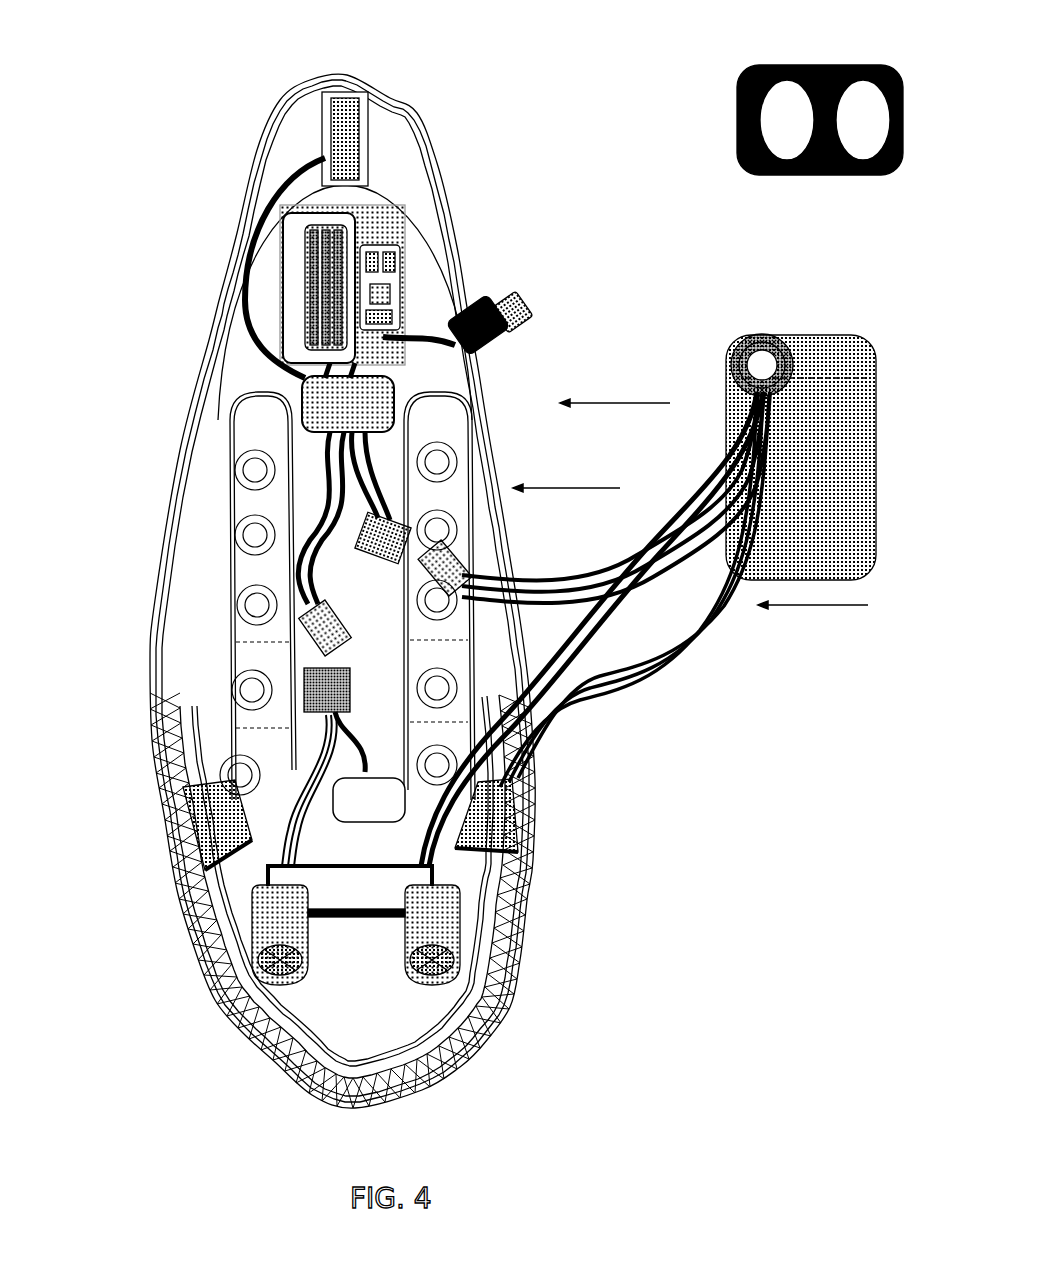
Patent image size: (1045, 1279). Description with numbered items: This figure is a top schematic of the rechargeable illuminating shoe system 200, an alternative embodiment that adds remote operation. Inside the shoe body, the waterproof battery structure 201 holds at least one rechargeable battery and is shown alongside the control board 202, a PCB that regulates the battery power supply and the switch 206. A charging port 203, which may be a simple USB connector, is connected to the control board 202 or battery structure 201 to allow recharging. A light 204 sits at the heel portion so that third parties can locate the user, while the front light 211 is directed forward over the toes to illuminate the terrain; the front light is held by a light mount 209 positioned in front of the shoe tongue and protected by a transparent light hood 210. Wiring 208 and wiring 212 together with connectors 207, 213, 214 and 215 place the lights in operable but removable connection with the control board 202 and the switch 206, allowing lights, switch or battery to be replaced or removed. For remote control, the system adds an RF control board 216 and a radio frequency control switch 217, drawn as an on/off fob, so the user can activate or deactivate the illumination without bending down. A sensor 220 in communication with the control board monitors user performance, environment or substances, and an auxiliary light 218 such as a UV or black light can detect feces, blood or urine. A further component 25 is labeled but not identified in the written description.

The rechargeable illuminating shoe system 200 is at (252, 92).
The battery structure 201 is at (405, 248).
The control board 202 is at (378, 232).
The charging port 203 is at (524, 310).
The light 204 is at (368, 118).
The switch 206 is at (795, 348).
The connector 207 is at (365, 538).
The wiring 208 is at (530, 762).
The light mount 209 is at (225, 877).
The light hood 210 is at (440, 917).
The light 211 is at (430, 950).
The wiring 212 is at (325, 768).
The connector 213 is at (310, 632).
The connector 214 is at (318, 698).
The connector 215 is at (445, 565).
The RF control board 216 is at (330, 410).
The radio frequency control switch 217 is at (737, 108).
The auxiliary light 218 is at (545, 812).
The sensor 220 is at (392, 810).
The wires 25 is at (300, 508).